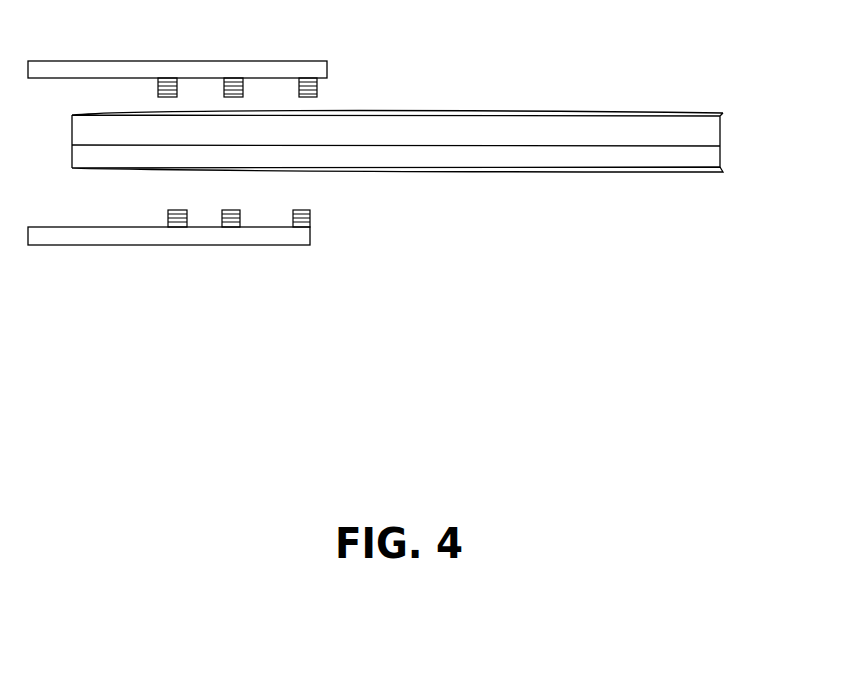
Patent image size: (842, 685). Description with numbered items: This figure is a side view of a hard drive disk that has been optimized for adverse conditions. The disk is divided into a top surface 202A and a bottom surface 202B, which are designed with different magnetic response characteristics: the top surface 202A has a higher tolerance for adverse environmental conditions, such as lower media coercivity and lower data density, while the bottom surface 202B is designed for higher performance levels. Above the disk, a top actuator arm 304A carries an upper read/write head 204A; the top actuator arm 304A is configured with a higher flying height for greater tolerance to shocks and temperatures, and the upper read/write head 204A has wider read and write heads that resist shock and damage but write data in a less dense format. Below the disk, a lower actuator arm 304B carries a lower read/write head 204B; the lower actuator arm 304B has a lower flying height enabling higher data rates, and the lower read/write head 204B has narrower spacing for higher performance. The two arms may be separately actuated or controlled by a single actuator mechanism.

The top actuator arm 304A is at (305, 61).
The upper read/write head 204A is at (316, 92).
The top surface 202A is at (715, 118).
The bottom surface 202B is at (635, 172).
The lower actuator arm 304B is at (220, 244).
The lower read/write head 204B is at (310, 215).